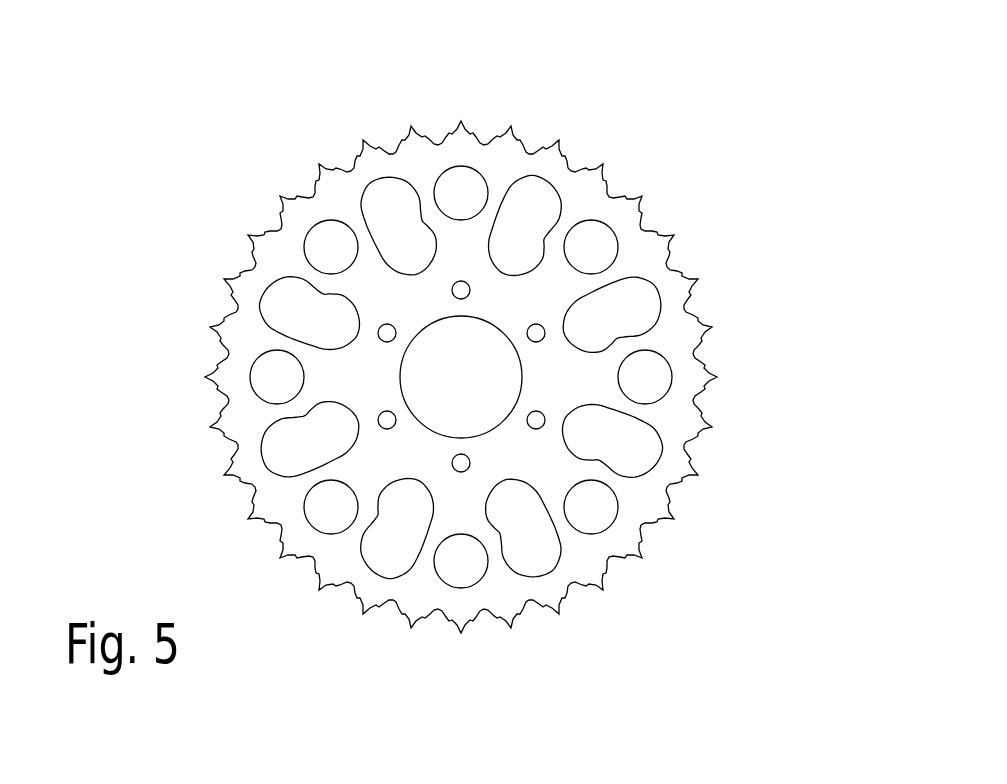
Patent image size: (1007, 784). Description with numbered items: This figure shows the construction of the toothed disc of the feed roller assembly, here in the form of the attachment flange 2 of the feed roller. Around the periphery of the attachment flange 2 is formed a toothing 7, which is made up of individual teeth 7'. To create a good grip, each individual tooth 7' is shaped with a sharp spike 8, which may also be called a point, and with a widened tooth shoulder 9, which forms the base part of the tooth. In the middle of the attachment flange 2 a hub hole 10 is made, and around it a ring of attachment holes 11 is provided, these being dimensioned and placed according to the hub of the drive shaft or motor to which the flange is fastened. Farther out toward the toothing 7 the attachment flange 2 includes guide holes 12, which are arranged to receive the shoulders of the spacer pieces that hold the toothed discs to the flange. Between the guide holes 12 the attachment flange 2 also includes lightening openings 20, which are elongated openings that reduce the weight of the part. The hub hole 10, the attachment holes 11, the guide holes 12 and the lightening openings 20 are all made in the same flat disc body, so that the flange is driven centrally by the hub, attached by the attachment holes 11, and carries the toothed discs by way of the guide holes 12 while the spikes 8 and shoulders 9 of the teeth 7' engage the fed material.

The attachment flange 2 is at (641, 82).
The toothing 7 is at (468, 59).
The individual tooth 7' is at (176, 183).
The sharp spike 8 is at (363, 140).
The widened tooth shoulder 9 is at (608, 176).
The hub hole 10 is at (413, 338).
The attachment holes 11 is at (470, 292).
The guide holes 12 is at (482, 580).
The lightening openings 20 is at (293, 420).